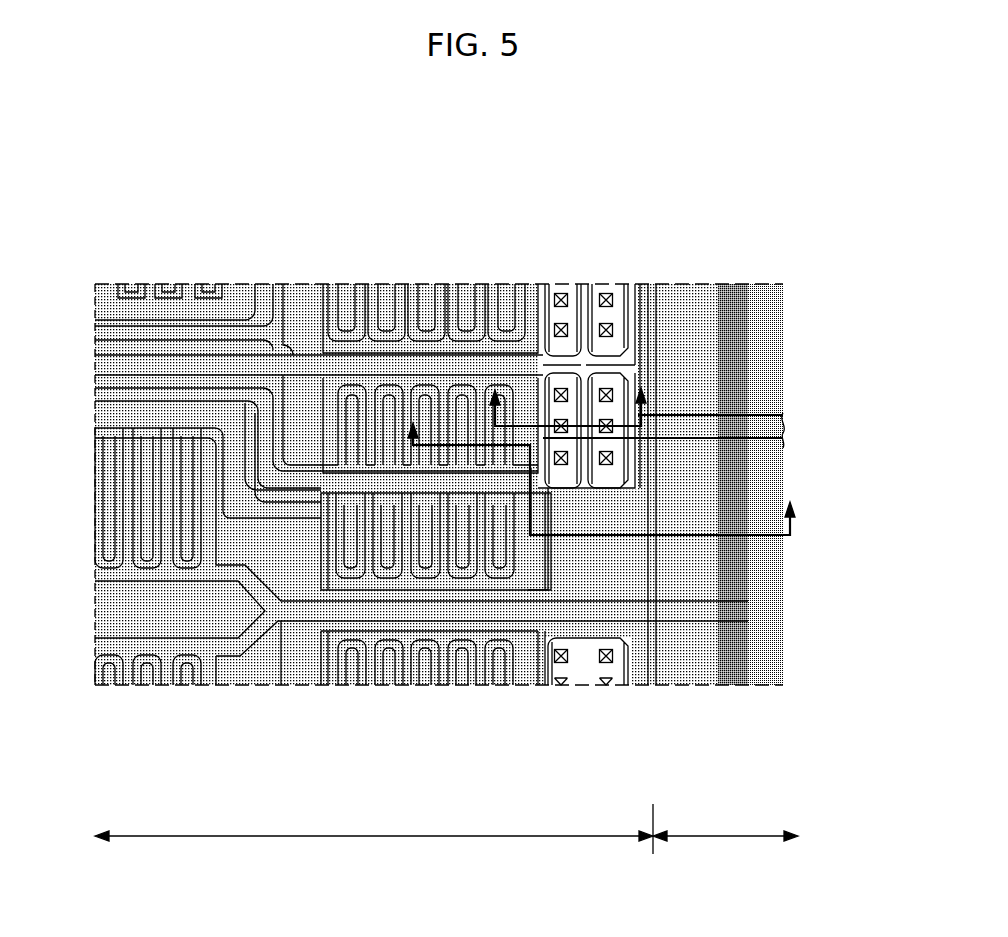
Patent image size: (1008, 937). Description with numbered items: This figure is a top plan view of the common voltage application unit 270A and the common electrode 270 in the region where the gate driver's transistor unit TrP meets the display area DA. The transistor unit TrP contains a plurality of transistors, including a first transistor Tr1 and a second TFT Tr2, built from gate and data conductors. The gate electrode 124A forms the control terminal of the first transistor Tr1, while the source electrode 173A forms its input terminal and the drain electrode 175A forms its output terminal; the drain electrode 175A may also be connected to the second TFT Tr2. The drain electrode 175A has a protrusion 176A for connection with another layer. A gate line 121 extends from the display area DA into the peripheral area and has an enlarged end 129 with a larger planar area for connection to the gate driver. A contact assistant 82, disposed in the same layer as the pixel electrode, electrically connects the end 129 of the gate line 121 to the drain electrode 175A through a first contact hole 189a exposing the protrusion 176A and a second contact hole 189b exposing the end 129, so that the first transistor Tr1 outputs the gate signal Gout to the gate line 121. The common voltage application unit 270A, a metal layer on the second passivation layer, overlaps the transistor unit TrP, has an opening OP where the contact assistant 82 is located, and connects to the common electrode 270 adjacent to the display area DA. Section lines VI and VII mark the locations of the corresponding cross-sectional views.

The source electrode 173A is at (318, 415).
The drain electrode 175A is at (372, 375).
The opening OP is at (478, 372).
The contact assistant 82 is at (540, 366).
The first contact hole 189a is at (553, 382).
The second contact hole 189b is at (598, 382).
The end of gate line 129 is at (627, 357).
The gate line 121 is at (750, 407).
The gate signal Gout is at (782, 420).
The protrusion 176A is at (580, 432).
The common voltage application unit 270A is at (680, 560).
The common electrode 270 is at (757, 630).
The gate electrode 124A is at (277, 492).
The first transistor Tr1 is at (374, 587).
The second TFT Tr2 is at (128, 562).
The transistor unit TrP is at (374, 838).
The display area DA is at (725, 852).
The section line VI is at (603, 474).
The section line VII is at (569, 405).